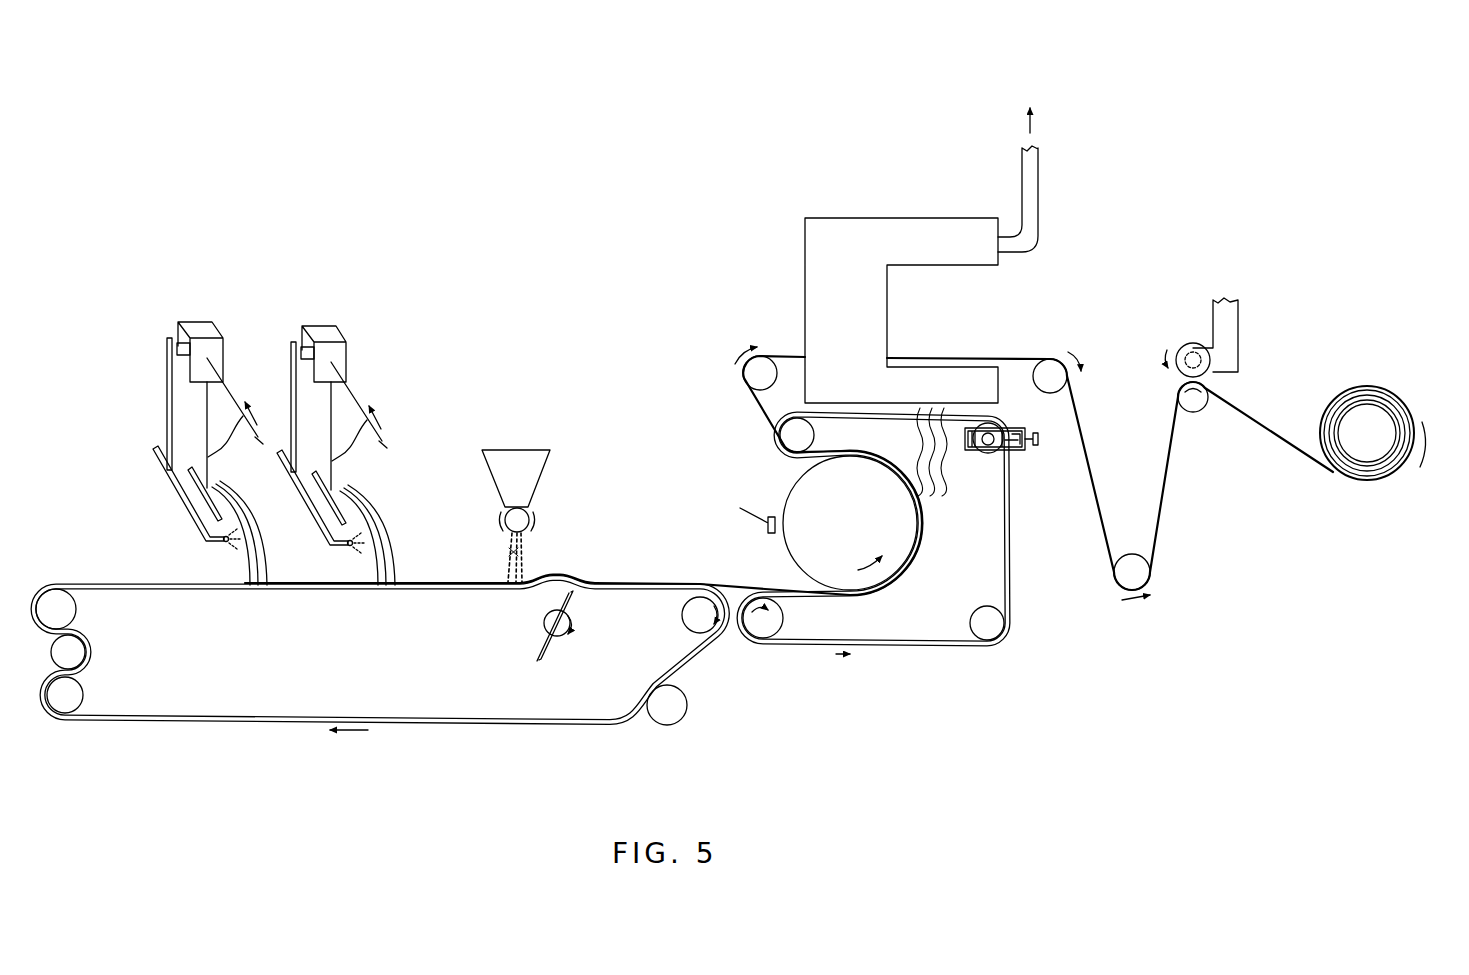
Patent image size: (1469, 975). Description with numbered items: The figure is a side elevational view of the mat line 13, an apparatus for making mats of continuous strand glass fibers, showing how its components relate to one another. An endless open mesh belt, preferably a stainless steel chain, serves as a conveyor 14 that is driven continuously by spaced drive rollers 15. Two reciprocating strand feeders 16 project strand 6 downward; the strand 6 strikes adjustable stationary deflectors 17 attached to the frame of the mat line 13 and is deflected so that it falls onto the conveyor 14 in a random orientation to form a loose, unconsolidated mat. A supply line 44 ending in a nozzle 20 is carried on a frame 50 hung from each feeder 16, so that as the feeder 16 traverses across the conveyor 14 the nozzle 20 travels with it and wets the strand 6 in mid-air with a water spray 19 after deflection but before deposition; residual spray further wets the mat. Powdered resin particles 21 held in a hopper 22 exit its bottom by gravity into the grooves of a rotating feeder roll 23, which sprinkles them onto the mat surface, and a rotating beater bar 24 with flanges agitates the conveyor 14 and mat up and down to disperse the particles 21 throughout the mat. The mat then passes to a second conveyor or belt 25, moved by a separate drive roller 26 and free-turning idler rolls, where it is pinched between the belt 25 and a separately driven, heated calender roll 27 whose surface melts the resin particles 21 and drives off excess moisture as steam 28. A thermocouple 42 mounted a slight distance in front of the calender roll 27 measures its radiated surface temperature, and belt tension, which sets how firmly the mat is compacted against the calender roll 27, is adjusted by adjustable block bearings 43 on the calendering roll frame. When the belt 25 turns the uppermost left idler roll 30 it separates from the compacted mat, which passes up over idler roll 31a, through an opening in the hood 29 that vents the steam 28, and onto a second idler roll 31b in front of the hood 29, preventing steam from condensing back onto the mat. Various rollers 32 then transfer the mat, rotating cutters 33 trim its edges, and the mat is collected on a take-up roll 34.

The strand 6 is at (297, 415).
The mat line 13 is at (680, 337).
The conveyor 14 is at (203, 585).
The drive rollers 15 is at (685, 627).
The reciprocating strand feeders 16 is at (184, 318).
The adjustable stationary deflectors 17 is at (194, 470).
The water spray 19 is at (238, 556).
The nozzle 20 is at (222, 541).
The powdered resin particles 21 is at (525, 562).
The hopper 22 is at (520, 450).
The grooved rotating feeder roll 23 is at (526, 514).
The rotating beater bar 24 is at (547, 651).
The second conveyor or belt 25 is at (905, 647).
The drive roller 26 is at (785, 617).
The calender roll 27 is at (792, 491).
The steam 28 is at (934, 493).
The hood 29 is at (865, 218).
The uppermost left idler roll 30 is at (803, 418).
The idler roll 31a is at (752, 378).
The second idler roll 31b is at (1052, 364).
The rollers 32 is at (1190, 409).
The rotating cutters 33 is at (1193, 342).
The take-up roll 34 is at (1393, 393).
The thermocouple 42 is at (770, 532).
The adjustable block bearings 43 is at (1020, 452).
The supply line 44 is at (178, 500).
The frame 50 is at (166, 389).